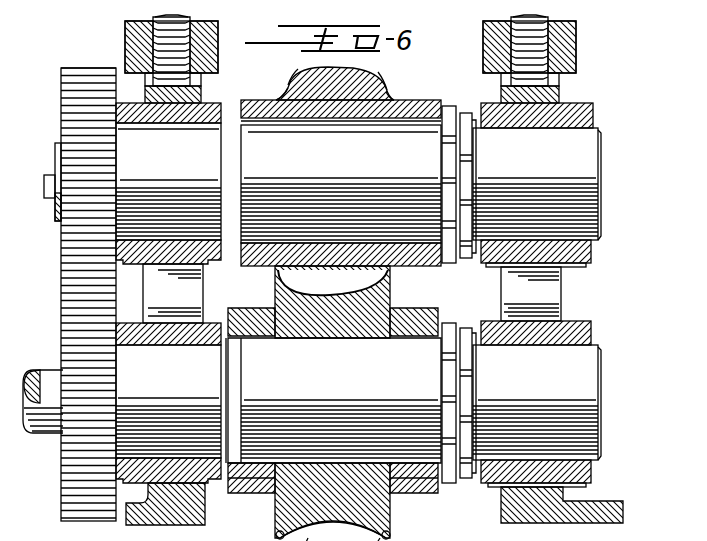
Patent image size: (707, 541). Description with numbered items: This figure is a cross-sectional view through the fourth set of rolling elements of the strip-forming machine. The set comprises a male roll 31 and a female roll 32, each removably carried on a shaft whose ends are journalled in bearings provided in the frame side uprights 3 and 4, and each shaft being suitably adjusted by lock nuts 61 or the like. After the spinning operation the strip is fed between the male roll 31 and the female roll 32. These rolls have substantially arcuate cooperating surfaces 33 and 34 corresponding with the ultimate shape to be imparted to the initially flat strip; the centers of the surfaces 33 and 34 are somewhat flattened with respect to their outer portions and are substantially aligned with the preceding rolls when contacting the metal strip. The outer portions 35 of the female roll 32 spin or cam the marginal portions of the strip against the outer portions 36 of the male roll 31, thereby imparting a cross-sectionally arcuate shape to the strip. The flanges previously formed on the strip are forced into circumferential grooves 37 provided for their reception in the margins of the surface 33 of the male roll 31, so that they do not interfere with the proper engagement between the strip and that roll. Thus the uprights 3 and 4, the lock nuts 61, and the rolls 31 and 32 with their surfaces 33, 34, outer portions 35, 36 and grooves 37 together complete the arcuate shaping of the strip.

The side upright 3 is at (140, 280).
The side upright 4 is at (530, 296).
The male roll 31 is at (262, 90).
The female roll 32 is at (267, 495).
The arcuate cooperating surface 33 is at (330, 65).
The arcuate cooperating surface 34 is at (318, 505).
The outer portions of the female roll 35 is at (268, 531).
The outer portions of the male roll 36 is at (280, 77).
The circumferential grooves 37 is at (272, 88).
The lock nuts 61 is at (456, 315).